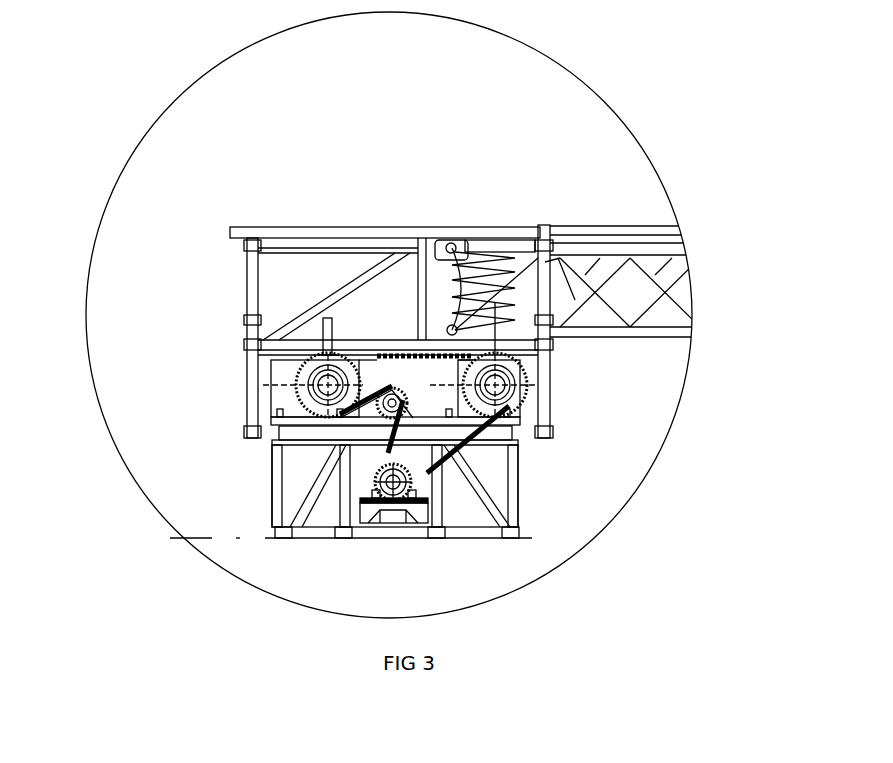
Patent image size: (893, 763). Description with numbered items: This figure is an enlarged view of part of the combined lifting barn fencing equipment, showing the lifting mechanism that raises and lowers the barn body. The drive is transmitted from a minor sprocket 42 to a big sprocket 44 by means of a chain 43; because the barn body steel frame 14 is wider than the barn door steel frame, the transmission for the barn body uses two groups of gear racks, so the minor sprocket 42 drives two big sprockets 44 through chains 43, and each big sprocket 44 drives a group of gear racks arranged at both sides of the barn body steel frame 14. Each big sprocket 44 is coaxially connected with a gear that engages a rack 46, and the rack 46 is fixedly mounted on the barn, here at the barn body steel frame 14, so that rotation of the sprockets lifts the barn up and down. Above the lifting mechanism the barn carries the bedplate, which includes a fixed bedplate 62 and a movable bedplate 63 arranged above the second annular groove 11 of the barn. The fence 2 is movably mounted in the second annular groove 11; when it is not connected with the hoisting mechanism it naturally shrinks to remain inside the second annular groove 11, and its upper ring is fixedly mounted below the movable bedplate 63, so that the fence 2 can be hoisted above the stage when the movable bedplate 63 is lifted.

The fence 2 is at (540, 287).
The second annular groove 11 is at (438, 288).
The barn body steel frame 14 is at (252, 308).
The minor sprocket 42 is at (507, 408).
The chain 43 is at (388, 452).
The big sprocket 44 is at (303, 400).
The rack 46 is at (323, 342).
The fixed bedplate 62 is at (290, 235).
The movable bedplate 63 is at (492, 233).